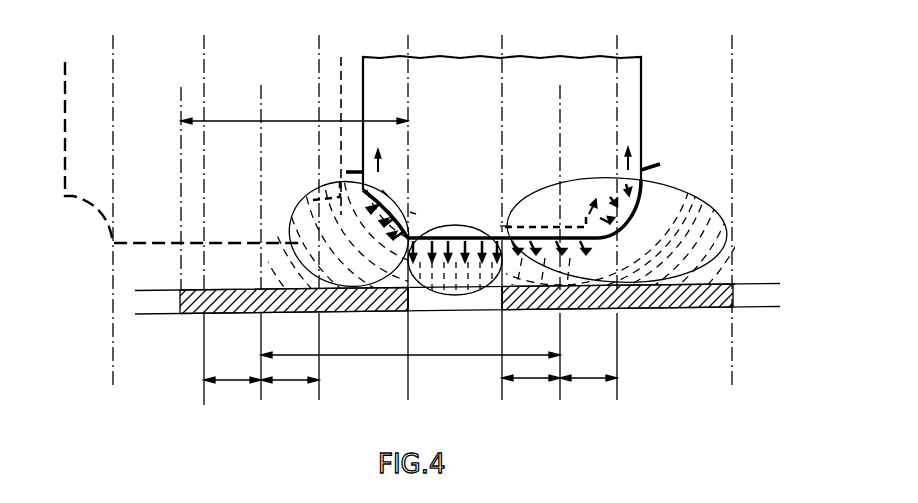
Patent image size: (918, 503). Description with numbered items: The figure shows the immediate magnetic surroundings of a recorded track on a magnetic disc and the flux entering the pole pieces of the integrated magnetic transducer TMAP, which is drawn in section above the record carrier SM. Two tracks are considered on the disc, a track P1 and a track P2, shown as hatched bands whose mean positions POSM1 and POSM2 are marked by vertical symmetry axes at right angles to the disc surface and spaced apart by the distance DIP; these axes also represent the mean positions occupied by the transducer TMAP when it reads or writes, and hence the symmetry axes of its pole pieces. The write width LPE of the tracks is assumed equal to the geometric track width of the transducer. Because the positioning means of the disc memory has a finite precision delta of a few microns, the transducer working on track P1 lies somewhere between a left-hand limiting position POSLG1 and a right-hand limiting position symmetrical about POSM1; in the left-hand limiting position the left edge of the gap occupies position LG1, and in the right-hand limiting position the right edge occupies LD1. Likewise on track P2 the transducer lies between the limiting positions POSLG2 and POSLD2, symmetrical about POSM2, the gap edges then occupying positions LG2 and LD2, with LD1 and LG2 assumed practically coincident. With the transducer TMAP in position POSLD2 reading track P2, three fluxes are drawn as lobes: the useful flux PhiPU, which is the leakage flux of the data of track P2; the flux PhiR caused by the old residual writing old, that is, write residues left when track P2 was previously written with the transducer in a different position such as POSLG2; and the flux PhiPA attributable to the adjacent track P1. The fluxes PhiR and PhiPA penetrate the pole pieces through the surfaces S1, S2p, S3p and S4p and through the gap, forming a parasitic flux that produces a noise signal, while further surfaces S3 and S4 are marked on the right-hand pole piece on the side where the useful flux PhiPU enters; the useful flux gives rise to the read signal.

The left-hand gap edge position LG1 is at (113, 62).
The left limiting position POSLG1 is at (204, 62).
The mean position of track P1 POSM1 is at (261, 118).
The right limiting position for track P2 POSLD2 is at (319, 60).
The left-hand gap edge position for track P2 LG2 is at (408, 105).
The left limiting position for track P2 POSLG2 is at (502, 60).
The mean position of track P2 POSM2 is at (560, 128).
The right-hand gap edge position for track P2 LD2 is at (732, 60).
The integrated magnetic transducer TMAP is at (641, 76).
The adjacent-track flux PhiPA is at (318, 186).
The useful flux PhiPU is at (676, 178).
The write-residue flux PhiR is at (463, 295).
The magnetic record carrier SM is at (137, 314).
The track P1 is at (205, 314).
The track P2 is at (622, 309).
The track spacing DIP is at (455, 320).
The old residual writing old is at (497, 300).
The write width LPE is at (294, 109).
The right-hand gap edge position for track P1 LD1 is at (408, 362).
The positioning precision delta is at (410, 368).
The pole piece surface S'4 S4p is at (393, 157).
The pole piece surface S'3 S3p is at (397, 181).
The pole piece surface S'2 S2p is at (428, 203).
The pole piece surface S1 is at (496, 211).
The field component S3 is at (589, 192).
The field component S4 is at (618, 154).